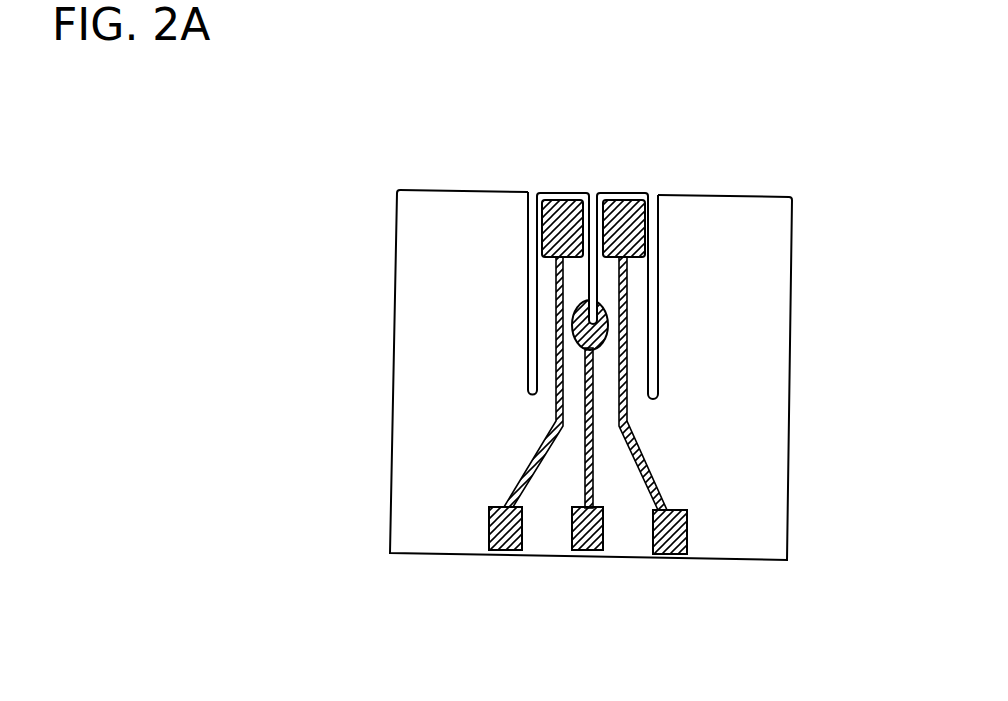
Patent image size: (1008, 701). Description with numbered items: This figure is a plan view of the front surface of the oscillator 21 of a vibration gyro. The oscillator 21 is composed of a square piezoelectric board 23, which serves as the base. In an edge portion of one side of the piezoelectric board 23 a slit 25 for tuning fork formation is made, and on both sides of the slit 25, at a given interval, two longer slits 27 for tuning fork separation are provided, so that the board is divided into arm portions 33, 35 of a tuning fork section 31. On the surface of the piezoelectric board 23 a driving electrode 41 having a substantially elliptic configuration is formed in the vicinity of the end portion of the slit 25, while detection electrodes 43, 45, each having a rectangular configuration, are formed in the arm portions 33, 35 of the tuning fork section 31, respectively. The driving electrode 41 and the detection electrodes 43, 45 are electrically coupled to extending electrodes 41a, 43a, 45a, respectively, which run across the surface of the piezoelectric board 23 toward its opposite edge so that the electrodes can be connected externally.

The oscillator 21 is at (412, 158).
The piezoelectric board 23 is at (742, 408).
The slit for tuning fork formation 25 is at (597, 176).
The slits for tuning fork separation 27 is at (523, 178).
The tuning fork section 31 is at (688, 257).
The arm portion 33 is at (563, 192).
The arm portion 35 is at (623, 193).
The driving electrode 41 is at (583, 340).
The extending electrode 41a is at (585, 550).
The detection electrode 43 is at (560, 232).
The extending electrode 43a is at (498, 547).
The detection electrode 45 is at (620, 232).
The extending electrode 45a is at (668, 548).